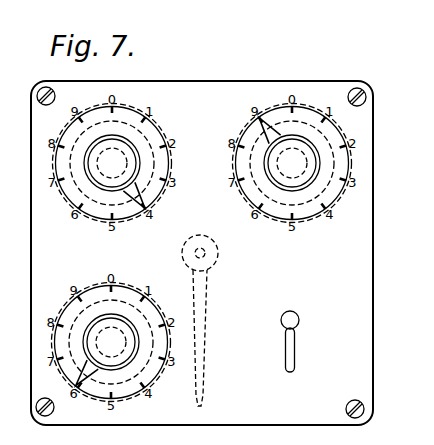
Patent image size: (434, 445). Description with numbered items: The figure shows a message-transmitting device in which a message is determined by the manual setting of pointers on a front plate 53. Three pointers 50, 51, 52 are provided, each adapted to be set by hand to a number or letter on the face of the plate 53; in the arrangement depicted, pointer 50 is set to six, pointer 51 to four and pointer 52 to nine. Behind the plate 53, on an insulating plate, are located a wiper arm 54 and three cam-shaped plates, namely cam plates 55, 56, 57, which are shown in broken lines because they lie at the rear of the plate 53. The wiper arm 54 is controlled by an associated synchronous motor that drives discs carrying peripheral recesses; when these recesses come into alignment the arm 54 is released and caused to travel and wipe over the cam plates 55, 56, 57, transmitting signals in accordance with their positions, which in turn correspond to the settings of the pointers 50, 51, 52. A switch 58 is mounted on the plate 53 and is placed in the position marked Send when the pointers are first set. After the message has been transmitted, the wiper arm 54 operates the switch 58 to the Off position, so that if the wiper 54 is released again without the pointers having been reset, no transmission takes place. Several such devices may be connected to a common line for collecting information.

The pointer 50 is at (95, 373).
The pointer 51 is at (135, 194).
The pointer 52 is at (259, 127).
The plate 53 is at (360, 314).
The wiper arm 54 is at (207, 326).
The cam plate 55 is at (75, 321).
The cam plate 56 is at (145, 133).
The cam plate 57 is at (302, 221).
The switch 58 is at (295, 313).